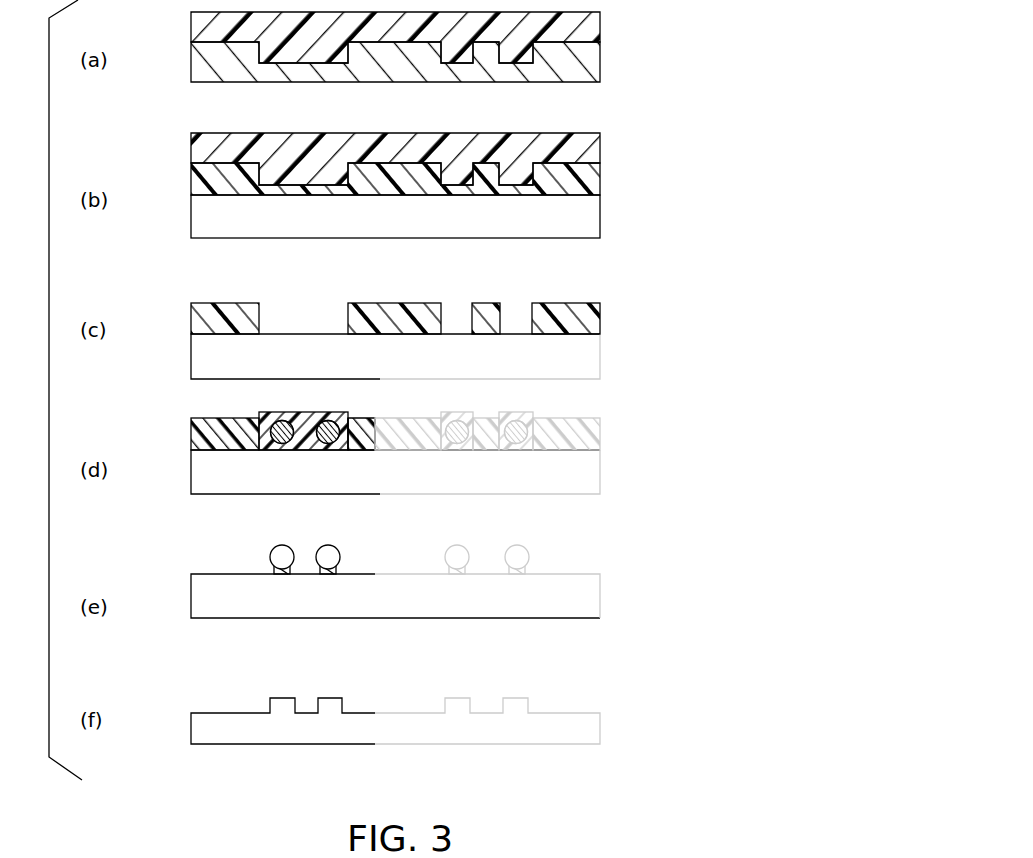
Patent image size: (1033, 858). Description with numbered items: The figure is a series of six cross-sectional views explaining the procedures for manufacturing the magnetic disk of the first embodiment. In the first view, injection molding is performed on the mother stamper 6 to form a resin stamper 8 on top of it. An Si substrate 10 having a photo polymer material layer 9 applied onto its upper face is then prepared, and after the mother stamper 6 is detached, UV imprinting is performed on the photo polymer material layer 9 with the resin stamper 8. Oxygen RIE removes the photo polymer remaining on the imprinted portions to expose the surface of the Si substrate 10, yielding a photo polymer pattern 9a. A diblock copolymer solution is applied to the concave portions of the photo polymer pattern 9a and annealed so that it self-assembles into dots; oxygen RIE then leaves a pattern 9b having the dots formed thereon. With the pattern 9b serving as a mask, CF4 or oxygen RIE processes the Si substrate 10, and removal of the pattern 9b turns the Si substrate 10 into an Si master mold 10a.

The mother stamper 6 is at (598, 58).
The resin stamper 8 is at (598, 32).
The photo polymer material layer 9 is at (598, 180).
The photo polymer pattern 9a is at (598, 317).
The pattern having dots 9b is at (528, 553).
The Si substrate 10 is at (598, 213).
The Si master mold 10a is at (598, 728).